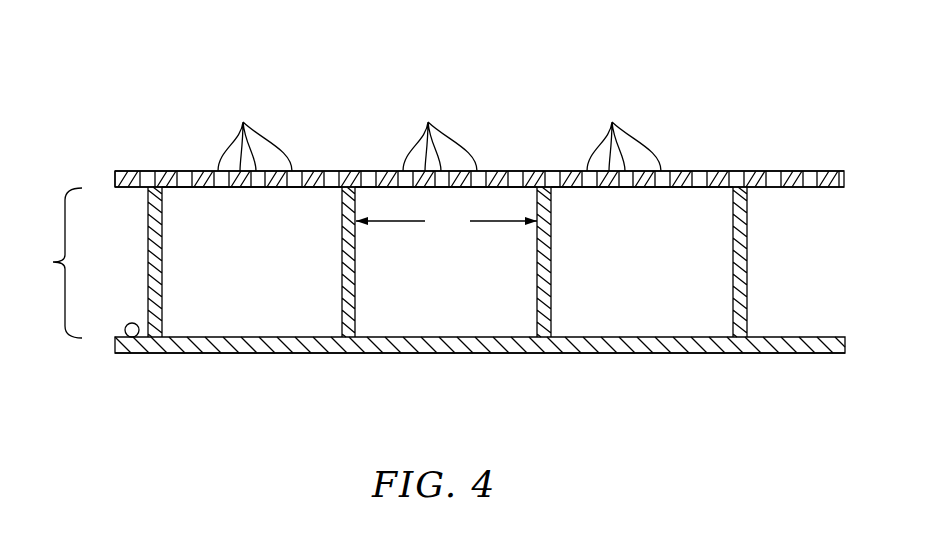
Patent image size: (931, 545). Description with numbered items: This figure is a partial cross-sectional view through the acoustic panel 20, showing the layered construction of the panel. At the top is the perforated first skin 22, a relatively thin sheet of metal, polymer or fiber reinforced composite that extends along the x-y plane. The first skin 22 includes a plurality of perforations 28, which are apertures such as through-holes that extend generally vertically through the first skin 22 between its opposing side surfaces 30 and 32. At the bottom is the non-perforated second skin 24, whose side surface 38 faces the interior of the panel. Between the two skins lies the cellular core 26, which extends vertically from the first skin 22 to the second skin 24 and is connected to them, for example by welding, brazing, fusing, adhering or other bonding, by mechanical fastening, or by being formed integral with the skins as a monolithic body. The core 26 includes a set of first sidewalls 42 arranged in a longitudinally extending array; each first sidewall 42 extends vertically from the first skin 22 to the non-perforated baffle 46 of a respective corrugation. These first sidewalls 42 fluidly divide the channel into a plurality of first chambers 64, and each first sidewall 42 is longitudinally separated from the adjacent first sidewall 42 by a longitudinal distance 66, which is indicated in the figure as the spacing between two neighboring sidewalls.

The acoustic panel 20 is at (706, 78).
The first skin 22 is at (115, 178).
The second skin 24 is at (115, 345).
The cellular core 26 is at (50, 263).
The perforations 28 is at (439, 131).
The side surface of first skin 30 is at (142, 171).
The side surface of first skin 32 is at (128, 188).
The side surface of second skin 38 is at (137, 336).
The first sidewalls 42 is at (162, 226).
The baffle 46 is at (590, 300).
The first chambers 64 is at (240, 286).
The longitudinal distance 66 is at (446, 222).